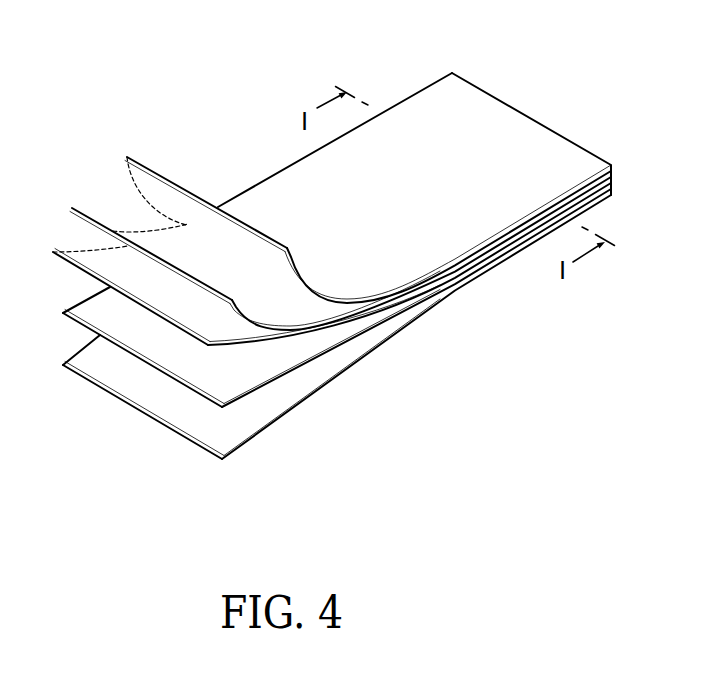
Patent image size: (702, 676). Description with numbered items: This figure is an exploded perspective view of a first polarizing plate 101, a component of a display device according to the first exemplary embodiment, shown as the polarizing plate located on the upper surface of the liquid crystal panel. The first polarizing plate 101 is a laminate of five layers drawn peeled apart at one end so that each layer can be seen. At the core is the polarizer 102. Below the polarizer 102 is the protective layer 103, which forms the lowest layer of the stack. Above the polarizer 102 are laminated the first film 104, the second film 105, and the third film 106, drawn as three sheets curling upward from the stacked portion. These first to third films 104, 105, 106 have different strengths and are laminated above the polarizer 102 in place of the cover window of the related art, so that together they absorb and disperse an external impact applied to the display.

The first polarizing plate 101 is at (634, 67).
The first film 104 is at (140, 177).
The second film 105 is at (300, 315).
The third film 106 is at (235, 333).
The polarizer 102 is at (240, 387).
The protective layer 103 is at (232, 433).